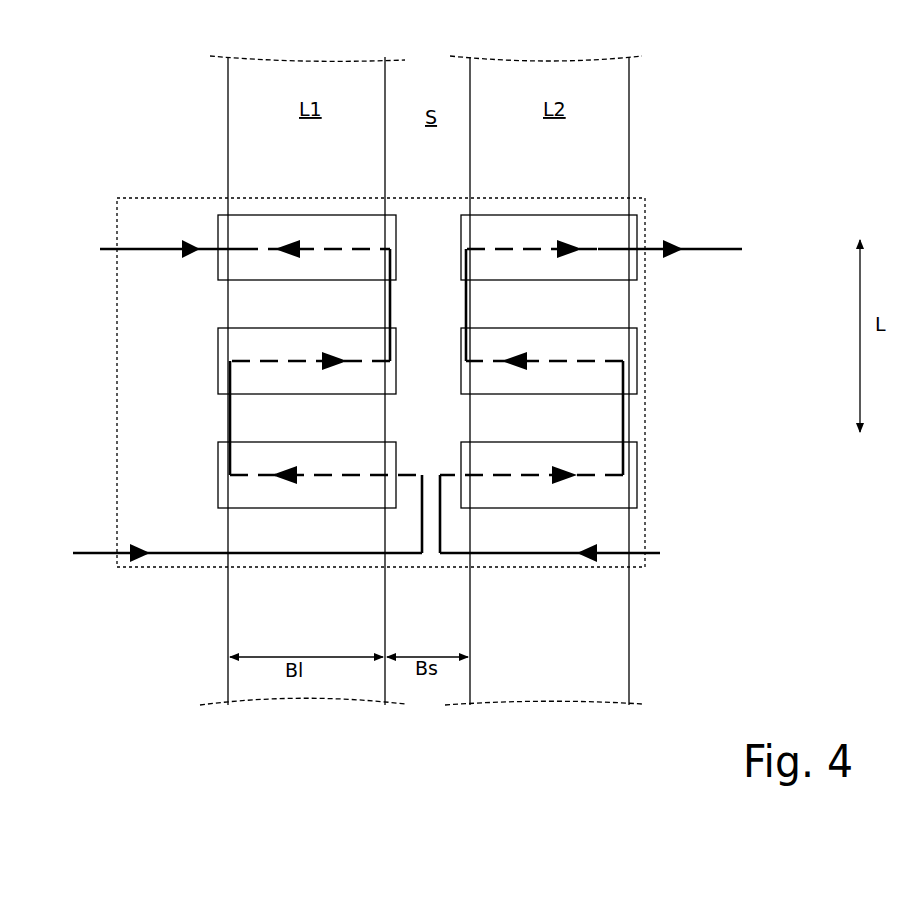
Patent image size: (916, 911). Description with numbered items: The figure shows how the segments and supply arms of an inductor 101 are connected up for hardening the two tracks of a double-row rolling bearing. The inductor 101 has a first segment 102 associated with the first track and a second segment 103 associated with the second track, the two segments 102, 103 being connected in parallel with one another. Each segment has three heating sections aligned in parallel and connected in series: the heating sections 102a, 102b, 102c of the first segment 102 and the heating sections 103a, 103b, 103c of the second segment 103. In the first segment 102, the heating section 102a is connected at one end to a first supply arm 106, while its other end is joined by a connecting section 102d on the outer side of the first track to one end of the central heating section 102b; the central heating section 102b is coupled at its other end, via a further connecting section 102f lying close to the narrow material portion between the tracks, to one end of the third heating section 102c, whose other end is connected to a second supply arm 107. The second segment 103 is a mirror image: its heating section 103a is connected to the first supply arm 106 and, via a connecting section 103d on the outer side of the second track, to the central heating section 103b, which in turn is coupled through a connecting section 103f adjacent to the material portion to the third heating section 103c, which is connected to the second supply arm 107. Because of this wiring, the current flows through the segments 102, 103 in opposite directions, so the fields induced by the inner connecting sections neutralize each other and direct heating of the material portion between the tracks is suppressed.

The inductor 101 is at (150, 197).
The first segment 102 is at (259, 345).
The heating section 102a is at (333, 480).
The central heating section 102b is at (285, 365).
The third heating section 102c is at (238, 249).
The connecting section 102d is at (227, 420).
The first conductor right connecting section 102f is at (393, 305).
The second segment 103 is at (584, 333).
The heating section 103a is at (545, 477).
The central heating section 103b is at (568, 360).
The third heating section 103c is at (552, 248).
The connecting section 103d is at (623, 415).
The second conductor left connecting section 103f is at (463, 297).
The first supply arm 106 is at (110, 552).
The second supply arm 107 is at (143, 248).